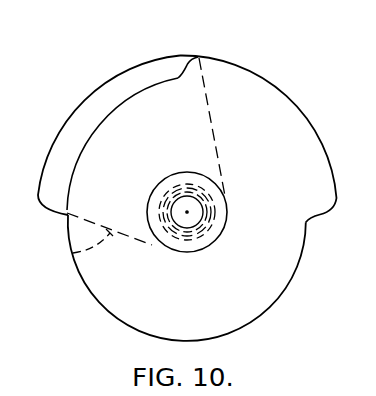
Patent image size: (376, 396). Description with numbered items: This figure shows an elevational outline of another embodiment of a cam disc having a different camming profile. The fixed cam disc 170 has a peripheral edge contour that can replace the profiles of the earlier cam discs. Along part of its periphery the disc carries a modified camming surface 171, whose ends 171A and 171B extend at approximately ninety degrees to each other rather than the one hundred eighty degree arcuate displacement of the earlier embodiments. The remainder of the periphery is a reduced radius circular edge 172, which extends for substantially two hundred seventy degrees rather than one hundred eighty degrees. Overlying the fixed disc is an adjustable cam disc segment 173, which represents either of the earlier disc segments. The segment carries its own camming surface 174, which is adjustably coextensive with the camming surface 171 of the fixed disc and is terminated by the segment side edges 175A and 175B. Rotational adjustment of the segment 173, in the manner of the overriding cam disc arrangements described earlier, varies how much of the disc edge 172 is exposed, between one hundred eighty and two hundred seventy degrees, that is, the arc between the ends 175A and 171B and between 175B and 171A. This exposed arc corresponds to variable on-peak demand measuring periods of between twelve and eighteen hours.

The fixed cam disc 170 is at (282, 120).
The modified camming surface 171 is at (251, 72).
The end of camming surface 171A is at (181, 71).
The end of camming surface 171B is at (322, 217).
The reduced radius circular edge 172 is at (110, 306).
The adjustable cam disc segment 173 is at (77, 118).
The camming surface of the segment 174 is at (103, 78).
The segment side edge 175A is at (75, 254).
The segment side edge 175B is at (216, 143).